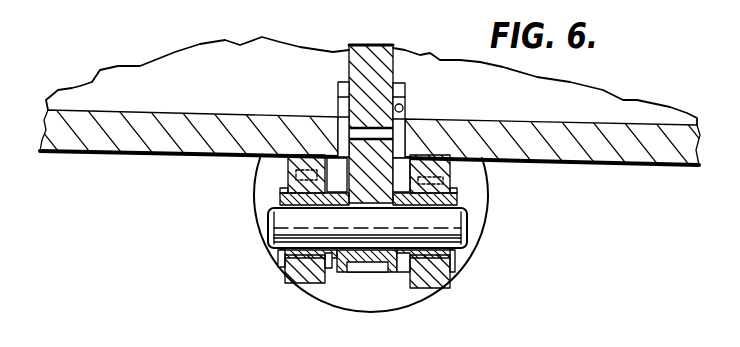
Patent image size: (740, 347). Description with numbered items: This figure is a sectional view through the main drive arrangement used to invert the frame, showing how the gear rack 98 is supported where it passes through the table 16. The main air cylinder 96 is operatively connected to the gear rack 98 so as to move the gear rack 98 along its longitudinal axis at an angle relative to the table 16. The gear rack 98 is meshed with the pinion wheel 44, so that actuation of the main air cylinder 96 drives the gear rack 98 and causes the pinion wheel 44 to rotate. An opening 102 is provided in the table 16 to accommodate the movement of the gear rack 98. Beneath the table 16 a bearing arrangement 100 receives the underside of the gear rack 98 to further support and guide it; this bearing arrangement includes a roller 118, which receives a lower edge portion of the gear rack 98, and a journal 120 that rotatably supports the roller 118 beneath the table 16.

The table 16 is at (205, 94).
The pinion wheel 44 is at (365, 78).
The opening 102 is at (407, 110).
The main air cylinder 96 is at (470, 198).
The gear rack 98 is at (349, 167).
The bearing arrangement 100 is at (276, 274).
The roller 118 is at (392, 278).
The journal 120 is at (437, 287).